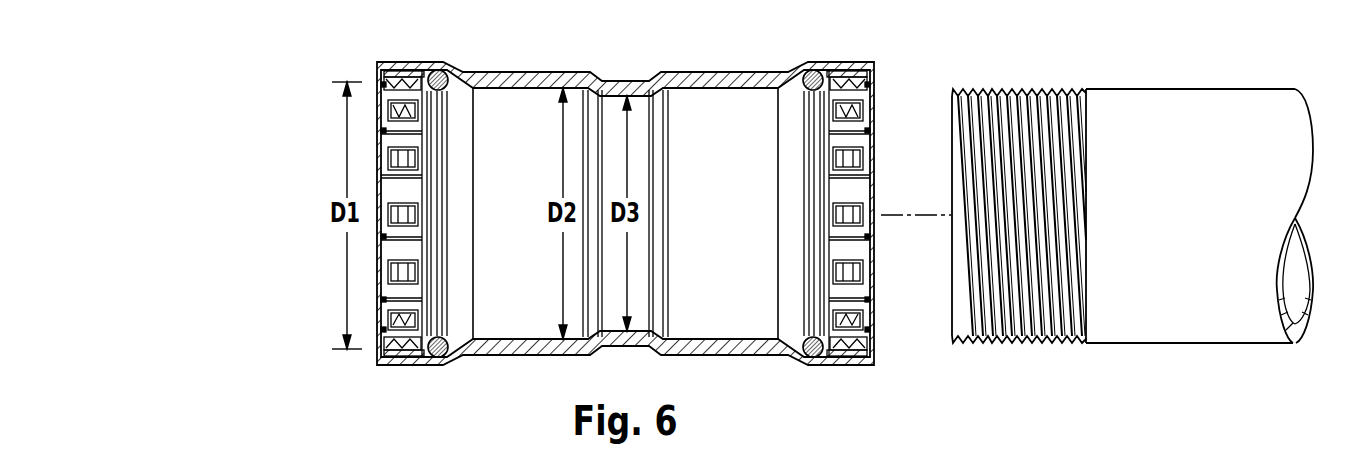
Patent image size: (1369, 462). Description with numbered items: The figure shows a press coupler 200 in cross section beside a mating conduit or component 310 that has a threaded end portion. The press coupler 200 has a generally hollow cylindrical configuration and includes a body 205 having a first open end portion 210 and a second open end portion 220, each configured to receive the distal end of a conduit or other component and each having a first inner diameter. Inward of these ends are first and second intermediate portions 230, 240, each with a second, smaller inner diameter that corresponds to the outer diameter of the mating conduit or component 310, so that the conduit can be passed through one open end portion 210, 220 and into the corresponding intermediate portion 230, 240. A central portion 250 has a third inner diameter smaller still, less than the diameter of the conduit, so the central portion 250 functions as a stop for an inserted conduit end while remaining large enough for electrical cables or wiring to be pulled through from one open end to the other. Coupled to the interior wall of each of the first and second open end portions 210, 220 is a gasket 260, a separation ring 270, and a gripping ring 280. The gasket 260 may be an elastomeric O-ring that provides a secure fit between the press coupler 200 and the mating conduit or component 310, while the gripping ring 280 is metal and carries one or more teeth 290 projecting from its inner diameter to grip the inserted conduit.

The press coupler 200 is at (622, 52).
The body 205 is at (537, 356).
The first open end portion 210 is at (296, 130).
The second open end portion 220 is at (893, 63).
The first intermediate portion 230 is at (484, 356).
The second intermediate portion 240 is at (712, 356).
The central portion 250 is at (612, 79).
The gasket 260 is at (447, 347).
The separation ring 270 is at (430, 358).
The gripping ring 280 is at (400, 357).
The teeth 290 is at (848, 138).
The mating conduit or component 310 is at (1170, 105).